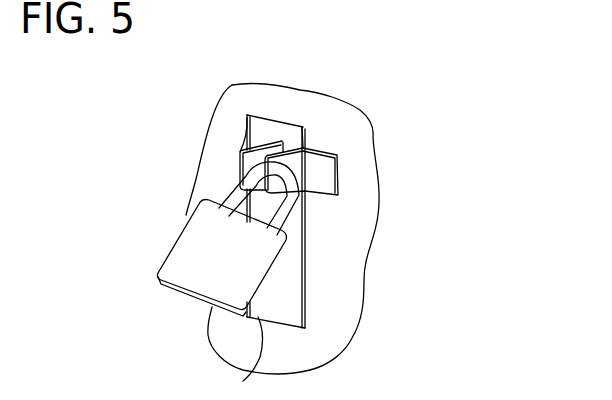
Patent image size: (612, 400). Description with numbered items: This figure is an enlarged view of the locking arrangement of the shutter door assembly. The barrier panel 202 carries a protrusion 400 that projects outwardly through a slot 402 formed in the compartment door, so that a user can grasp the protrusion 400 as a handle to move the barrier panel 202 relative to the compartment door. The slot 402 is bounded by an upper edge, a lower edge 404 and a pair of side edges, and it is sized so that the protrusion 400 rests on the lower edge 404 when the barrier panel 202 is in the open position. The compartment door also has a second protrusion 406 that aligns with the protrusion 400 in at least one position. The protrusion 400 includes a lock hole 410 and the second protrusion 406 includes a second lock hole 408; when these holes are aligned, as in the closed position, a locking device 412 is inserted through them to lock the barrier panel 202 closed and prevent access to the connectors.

The barrier panel 202 is at (273, 130).
The protrusion 400 is at (240, 147).
The slot 402 is at (338, 350).
The lower edge 404 is at (243, 381).
The second protrusion 406 is at (323, 167).
The second lock hole 408 is at (304, 127).
The lock hole 410 is at (240, 161).
The locking device 412 is at (194, 244).